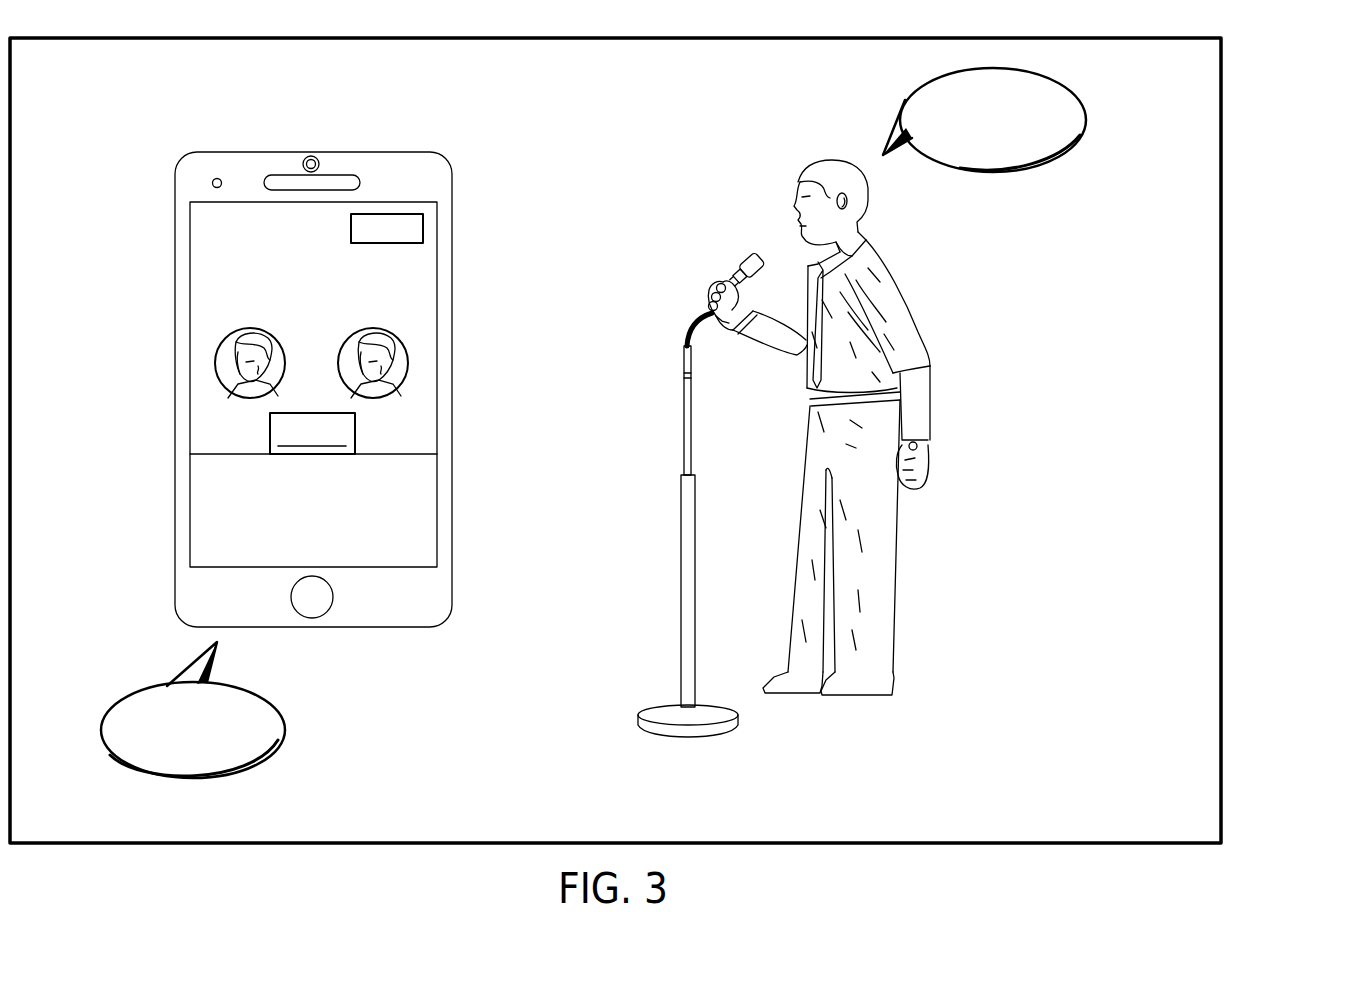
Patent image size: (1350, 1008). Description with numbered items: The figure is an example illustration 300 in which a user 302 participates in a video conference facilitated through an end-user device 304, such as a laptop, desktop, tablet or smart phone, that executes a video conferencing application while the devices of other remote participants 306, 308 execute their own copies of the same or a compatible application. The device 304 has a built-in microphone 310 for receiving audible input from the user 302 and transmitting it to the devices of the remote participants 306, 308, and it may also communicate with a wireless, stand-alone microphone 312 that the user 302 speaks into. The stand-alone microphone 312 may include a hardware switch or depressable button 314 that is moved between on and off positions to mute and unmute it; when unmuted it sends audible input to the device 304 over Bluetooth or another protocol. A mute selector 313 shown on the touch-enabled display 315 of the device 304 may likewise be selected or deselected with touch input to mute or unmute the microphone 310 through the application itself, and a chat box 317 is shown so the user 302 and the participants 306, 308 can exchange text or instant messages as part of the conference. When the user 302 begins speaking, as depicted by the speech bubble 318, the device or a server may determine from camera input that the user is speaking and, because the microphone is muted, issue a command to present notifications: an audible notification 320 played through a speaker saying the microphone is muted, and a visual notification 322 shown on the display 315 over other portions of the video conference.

The illustration 300 is at (1240, 58).
The user 302 is at (931, 400).
The end-user device 304 is at (413, 650).
The remote participant 306 is at (311, 156).
The remote participant 308 is at (372, 328).
The built-in microphone 310 is at (218, 177).
The wireless stand-alone microphone 312 is at (752, 257).
The mute selector 313 is at (423, 229).
The hardware switch or depressable button 314 is at (692, 378).
The touch-enabled display 315 is at (175, 372).
The chat window 317 is at (417, 488).
The speech bubble 318 is at (1087, 122).
The audible notification 320 is at (190, 778).
The visual notification 322 is at (270, 434).